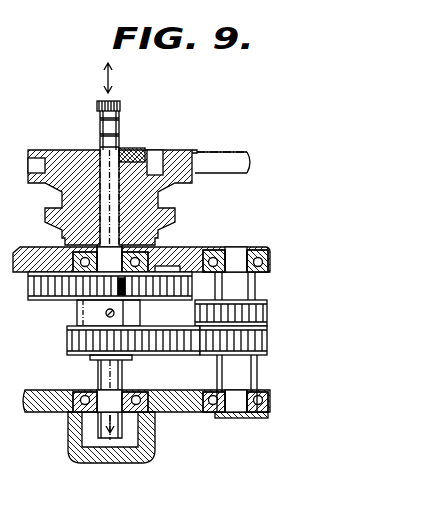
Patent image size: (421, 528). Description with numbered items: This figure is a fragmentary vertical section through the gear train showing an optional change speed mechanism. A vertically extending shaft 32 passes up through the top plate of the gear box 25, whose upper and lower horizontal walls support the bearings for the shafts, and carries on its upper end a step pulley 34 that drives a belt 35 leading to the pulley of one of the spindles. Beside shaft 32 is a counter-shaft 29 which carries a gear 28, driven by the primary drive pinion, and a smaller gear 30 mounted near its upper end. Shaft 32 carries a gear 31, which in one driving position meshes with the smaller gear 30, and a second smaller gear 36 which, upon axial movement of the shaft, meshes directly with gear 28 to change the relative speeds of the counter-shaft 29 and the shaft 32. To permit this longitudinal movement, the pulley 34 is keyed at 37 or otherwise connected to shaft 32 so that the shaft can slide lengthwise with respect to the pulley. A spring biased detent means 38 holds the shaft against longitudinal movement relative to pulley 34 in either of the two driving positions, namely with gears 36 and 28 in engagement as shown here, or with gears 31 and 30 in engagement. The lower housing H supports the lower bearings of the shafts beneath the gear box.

The key 37 is at (96, 160).
The spring biased detent means 38 is at (121, 156).
The step pulley 34 is at (152, 163).
The belt 35 is at (240, 150).
The gear box 25 is at (237, 242).
The gear 31 is at (36, 290).
The smaller gear 30 is at (199, 313).
The second smaller gear 36 is at (68, 348).
The gear 28 is at (214, 352).
The shaft 32 is at (97, 374).
The counter-shaft 29 is at (243, 385).
The housing H is at (49, 414).